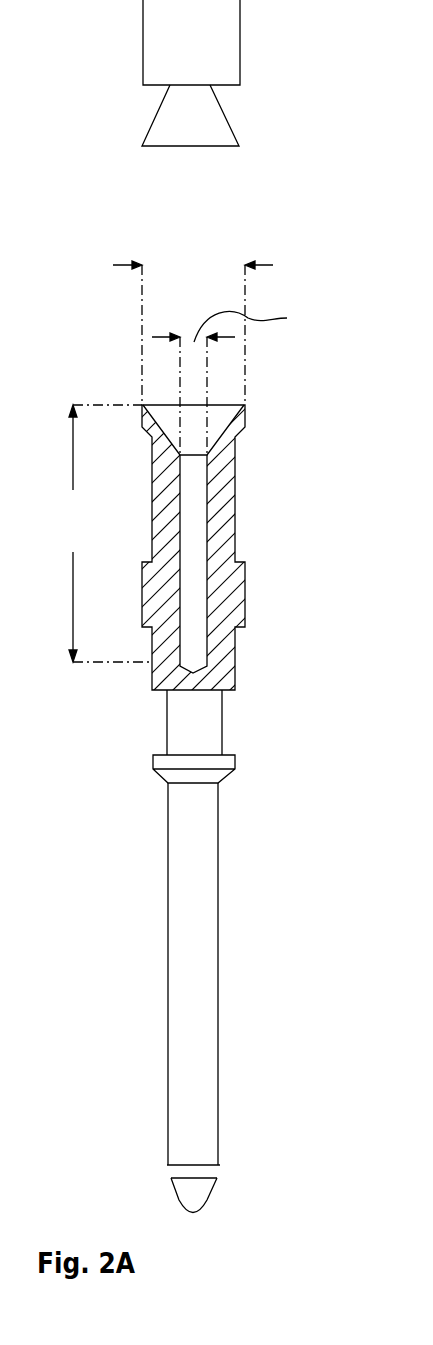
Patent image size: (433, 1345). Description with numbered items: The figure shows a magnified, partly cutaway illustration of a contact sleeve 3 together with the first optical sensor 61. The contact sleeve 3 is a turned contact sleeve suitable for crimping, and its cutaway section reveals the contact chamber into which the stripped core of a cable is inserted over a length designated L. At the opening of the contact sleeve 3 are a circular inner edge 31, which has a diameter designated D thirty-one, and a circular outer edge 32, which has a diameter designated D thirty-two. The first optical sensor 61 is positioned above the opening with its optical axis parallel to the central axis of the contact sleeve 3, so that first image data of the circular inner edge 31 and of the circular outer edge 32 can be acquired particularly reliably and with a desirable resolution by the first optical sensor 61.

The first optical sensor 61 is at (210, 48).
The contact sleeve 3 is at (318, 206).
The circular inner edge 31 is at (208, 515).
The circular outer edge 32 is at (242, 405).